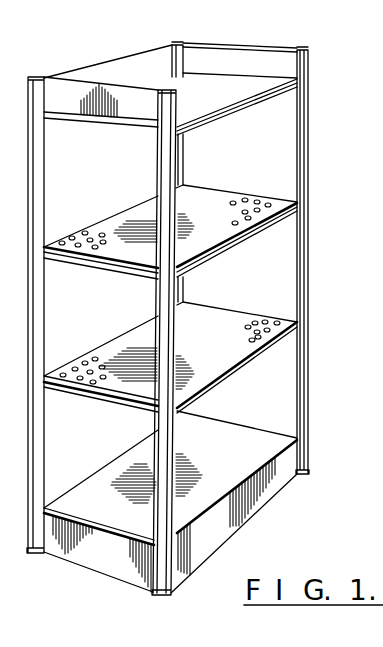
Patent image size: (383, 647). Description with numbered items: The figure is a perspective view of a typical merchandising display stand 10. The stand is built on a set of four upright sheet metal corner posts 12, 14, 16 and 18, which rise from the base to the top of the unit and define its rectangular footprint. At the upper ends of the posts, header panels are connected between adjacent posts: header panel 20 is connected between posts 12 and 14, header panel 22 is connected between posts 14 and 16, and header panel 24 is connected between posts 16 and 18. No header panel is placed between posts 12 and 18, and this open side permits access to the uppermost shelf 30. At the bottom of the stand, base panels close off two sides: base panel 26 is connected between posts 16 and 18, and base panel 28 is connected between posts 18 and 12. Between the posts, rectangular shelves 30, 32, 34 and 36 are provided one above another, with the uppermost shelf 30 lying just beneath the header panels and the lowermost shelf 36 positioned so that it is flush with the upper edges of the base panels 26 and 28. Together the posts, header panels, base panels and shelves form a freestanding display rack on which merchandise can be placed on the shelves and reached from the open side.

The shelving unit 10 is at (205, 323).
The corner post 12 is at (308, 128).
The corner post 14 is at (187, 153).
The corner post 16 is at (66, 192).
The corner post 18 is at (155, 158).
The header panel 20 is at (240, 56).
The header panel 22 is at (130, 62).
The header panel 24 is at (60, 88).
The base panel 26 is at (106, 563).
The base panel 28 is at (218, 532).
The uppermost shelf 30 is at (233, 88).
The shelf 32 is at (216, 231).
The shelf 34 is at (226, 358).
The lowermost shelf 36 is at (198, 452).